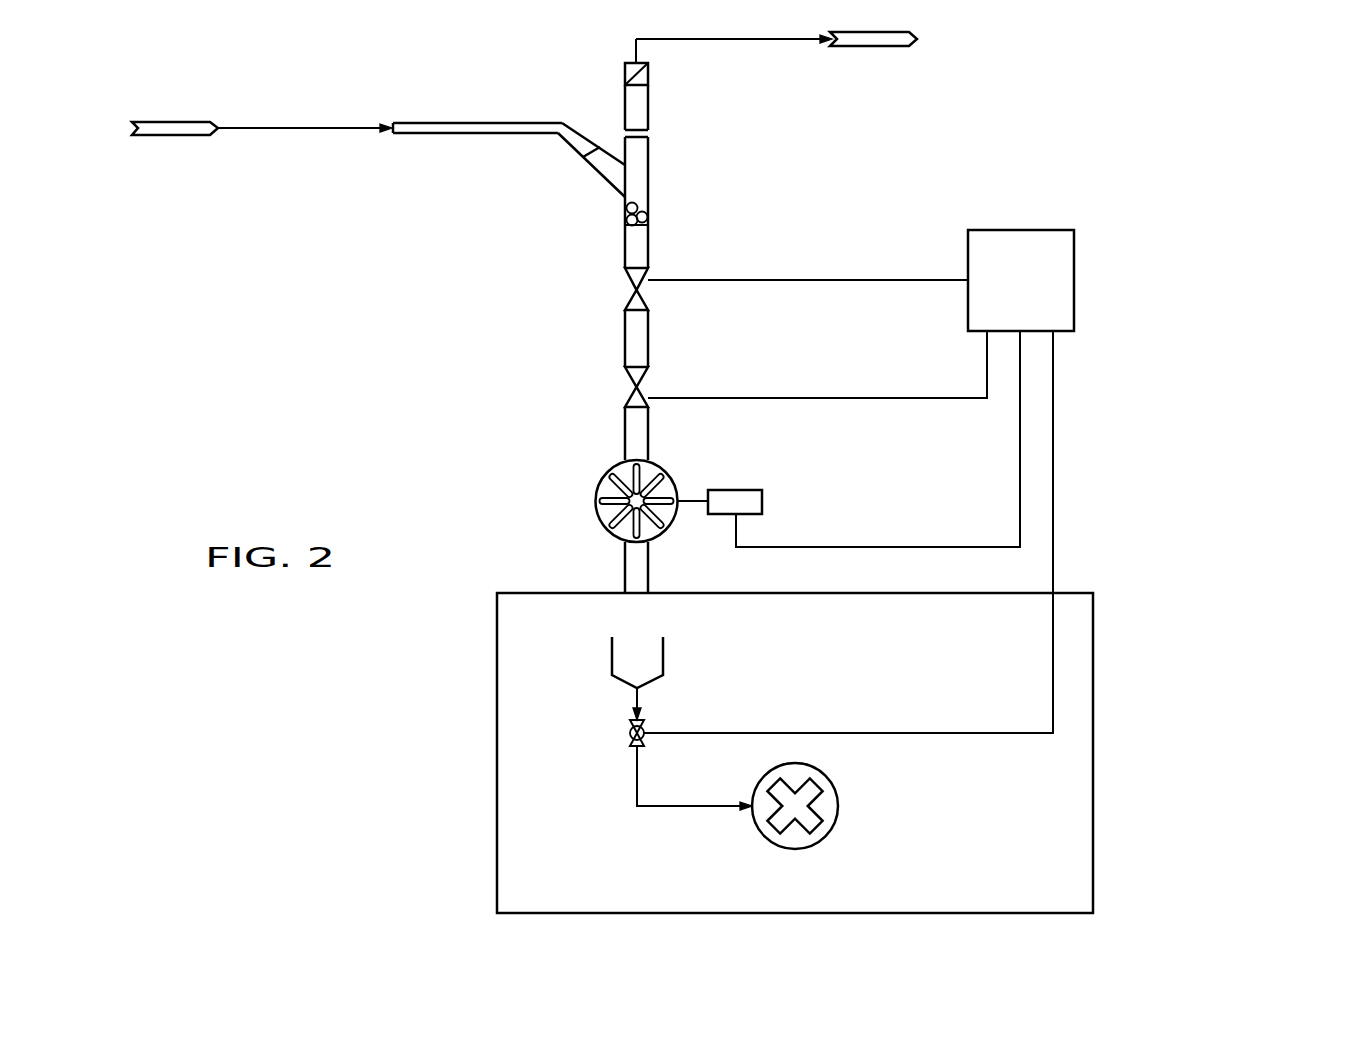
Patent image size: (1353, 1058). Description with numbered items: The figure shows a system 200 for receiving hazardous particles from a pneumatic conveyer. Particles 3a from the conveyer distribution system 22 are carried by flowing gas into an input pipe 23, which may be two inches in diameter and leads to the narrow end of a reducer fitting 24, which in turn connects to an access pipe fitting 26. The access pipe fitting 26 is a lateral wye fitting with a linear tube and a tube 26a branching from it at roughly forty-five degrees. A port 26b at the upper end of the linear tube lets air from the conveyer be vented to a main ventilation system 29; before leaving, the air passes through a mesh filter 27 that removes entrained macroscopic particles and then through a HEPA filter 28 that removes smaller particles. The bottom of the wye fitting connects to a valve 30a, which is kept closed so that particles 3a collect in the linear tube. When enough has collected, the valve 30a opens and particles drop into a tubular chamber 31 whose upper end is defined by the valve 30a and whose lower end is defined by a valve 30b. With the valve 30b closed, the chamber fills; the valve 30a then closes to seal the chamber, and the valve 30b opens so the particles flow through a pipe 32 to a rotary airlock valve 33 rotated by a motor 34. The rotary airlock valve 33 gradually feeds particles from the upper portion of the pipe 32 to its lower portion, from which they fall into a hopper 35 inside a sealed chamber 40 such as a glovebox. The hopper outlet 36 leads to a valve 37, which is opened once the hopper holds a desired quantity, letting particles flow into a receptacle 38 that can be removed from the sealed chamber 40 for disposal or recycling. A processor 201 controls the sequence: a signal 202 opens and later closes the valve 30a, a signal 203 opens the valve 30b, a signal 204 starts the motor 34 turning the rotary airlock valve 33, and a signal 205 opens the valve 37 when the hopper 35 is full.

The conveyer distribution system 22 is at (170, 137).
The input pipe 23 is at (420, 122).
The reducer fitting 24 is at (580, 128).
The access pipe fitting 26 is at (648, 203).
The tube 26a is at (598, 174).
The port 26b is at (648, 107).
The mesh filter 27 is at (637, 137).
The HEPA filter 28 is at (648, 72).
The main ventilation system 29 is at (871, 47).
The particles 3a is at (622, 217).
The valve 30a is at (625, 283).
The valve 30b is at (625, 394).
The tubular chamber 31 is at (625, 335).
The pipe 32 is at (625, 440).
The rotary airlock valve 33 is at (665, 470).
The motor 34 is at (748, 490).
The hopper 35 is at (657, 680).
The hopper outlet 36 is at (637, 697).
The valve 37 is at (648, 727).
The receptacle 38 is at (838, 806).
The sealed chamber 40 is at (1093, 733).
The system 200 is at (1115, 394).
The processor 201 is at (1042, 296).
The signal 202 is at (822, 278).
The signal 203 is at (808, 397).
The signal 204 is at (888, 546).
The signal 205 is at (905, 732).